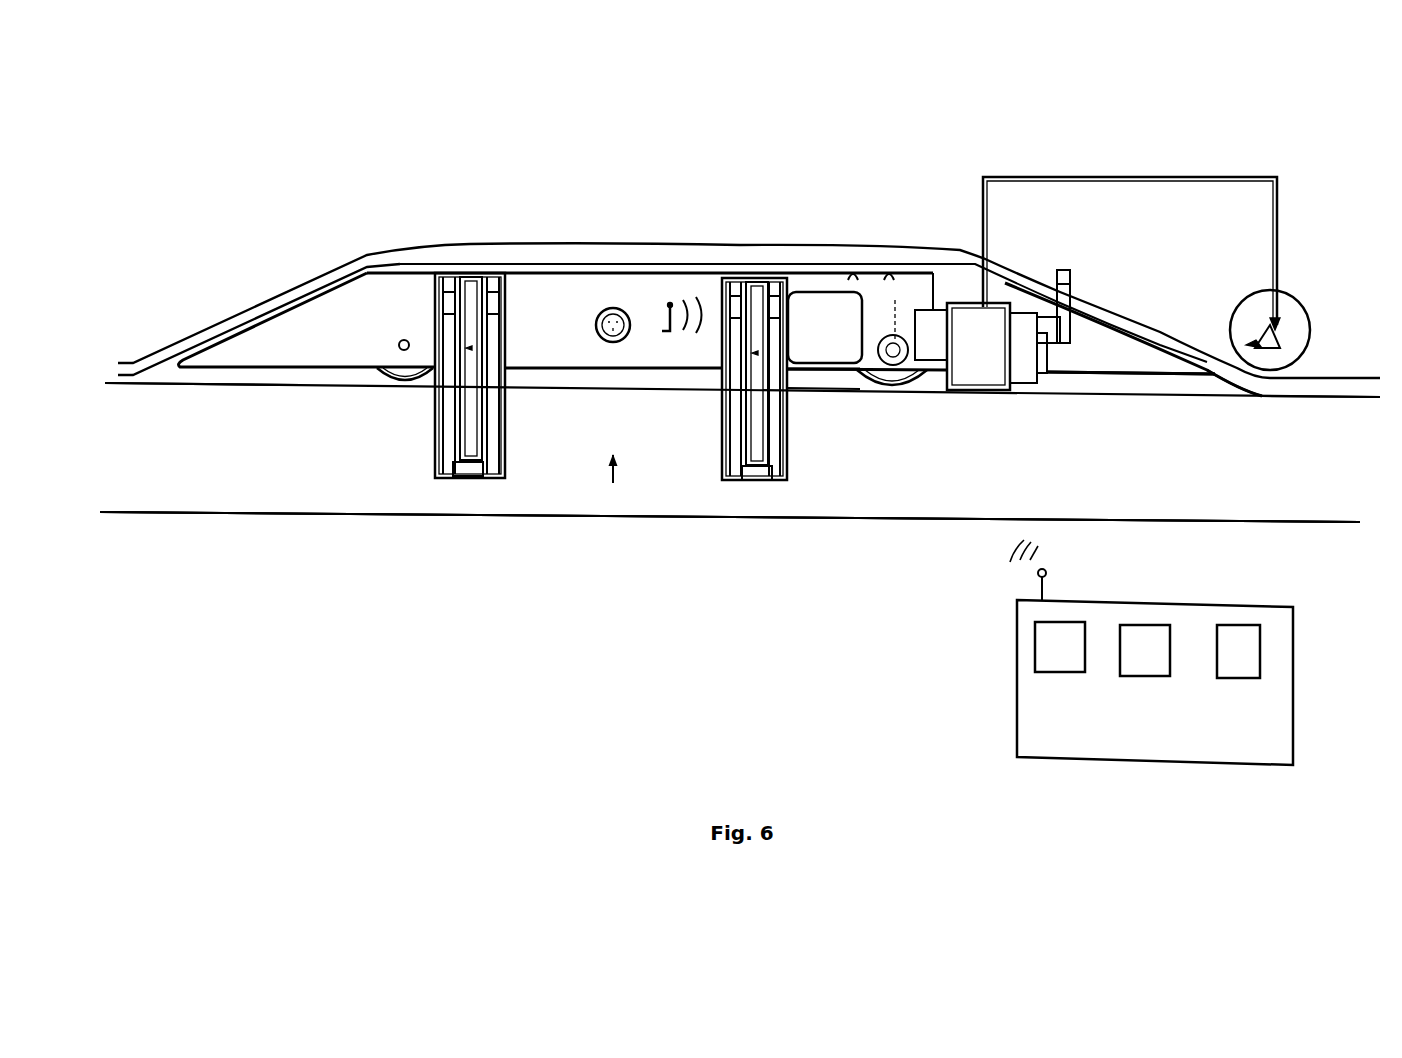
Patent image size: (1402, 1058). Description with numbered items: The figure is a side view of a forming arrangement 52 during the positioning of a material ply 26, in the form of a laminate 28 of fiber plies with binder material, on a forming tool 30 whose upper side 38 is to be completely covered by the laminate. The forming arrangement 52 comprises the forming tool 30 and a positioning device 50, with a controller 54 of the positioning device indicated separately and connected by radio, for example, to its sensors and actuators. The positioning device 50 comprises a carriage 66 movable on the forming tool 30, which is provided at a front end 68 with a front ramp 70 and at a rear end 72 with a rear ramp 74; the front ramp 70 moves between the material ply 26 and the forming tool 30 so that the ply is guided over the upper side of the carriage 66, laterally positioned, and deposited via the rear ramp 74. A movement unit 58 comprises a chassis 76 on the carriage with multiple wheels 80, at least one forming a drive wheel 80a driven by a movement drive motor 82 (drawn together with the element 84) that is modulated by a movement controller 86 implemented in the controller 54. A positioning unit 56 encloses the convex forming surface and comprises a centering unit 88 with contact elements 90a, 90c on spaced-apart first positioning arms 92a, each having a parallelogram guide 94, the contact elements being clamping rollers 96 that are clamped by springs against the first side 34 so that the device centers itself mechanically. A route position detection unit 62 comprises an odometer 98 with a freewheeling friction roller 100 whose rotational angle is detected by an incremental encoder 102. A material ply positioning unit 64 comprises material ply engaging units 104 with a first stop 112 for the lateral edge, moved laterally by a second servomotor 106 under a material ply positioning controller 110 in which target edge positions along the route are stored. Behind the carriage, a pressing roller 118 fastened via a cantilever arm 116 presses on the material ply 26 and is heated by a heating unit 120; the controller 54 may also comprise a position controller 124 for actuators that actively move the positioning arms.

The material ply 26 is at (200, 327).
The laminate 28 is at (250, 306).
The forming tool 30 is at (277, 470).
The first side 34 is at (311, 492).
The upper side 38 is at (640, 381).
The positioning device 50 is at (385, 300).
The forming arrangement 52 is at (403, 603).
The controller 54 is at (1180, 709).
The positioning unit 56 is at (574, 448).
The movement unit 58 is at (402, 401).
The route position detection unit 62 is at (817, 392).
The material ply positioning unit 64 is at (1071, 367).
The carriage 66 is at (557, 290).
The front end 68 is at (173, 386).
The front ramp 70 is at (288, 311).
The rear end 72 is at (1210, 397).
The rear ramp 74 is at (1147, 340).
The chassis 76 is at (406, 337).
The wheels 80 is at (383, 386).
The drive wheel 80a is at (897, 398).
The movement drive motor 82 is at (841, 277).
The power unit 84 is at (823, 297).
The movement controller 86 is at (1060, 647).
The centering unit 88 is at (514, 486).
The first contact element 90a is at (591, 449).
The third contact element 90c is at (711, 470).
The first positioning arms 92a is at (437, 476).
The parallelogram guide 94 is at (758, 400).
The clamping rollers 96 is at (456, 449).
The odometer 98 is at (822, 394).
The friction roller 100 is at (850, 394).
The incremental encoder 102 is at (807, 366).
The material ply engaging unit 104 is at (1064, 271).
The second servomotor 106 is at (976, 391).
The material ply positioning controller 110 is at (1240, 652).
The first stop 112 is at (1068, 296).
The cantilever arm 116 is at (1247, 178).
The pressing roller 118 is at (1300, 307).
The heating unit 120 is at (1283, 340).
The position controller 124 is at (1146, 665).